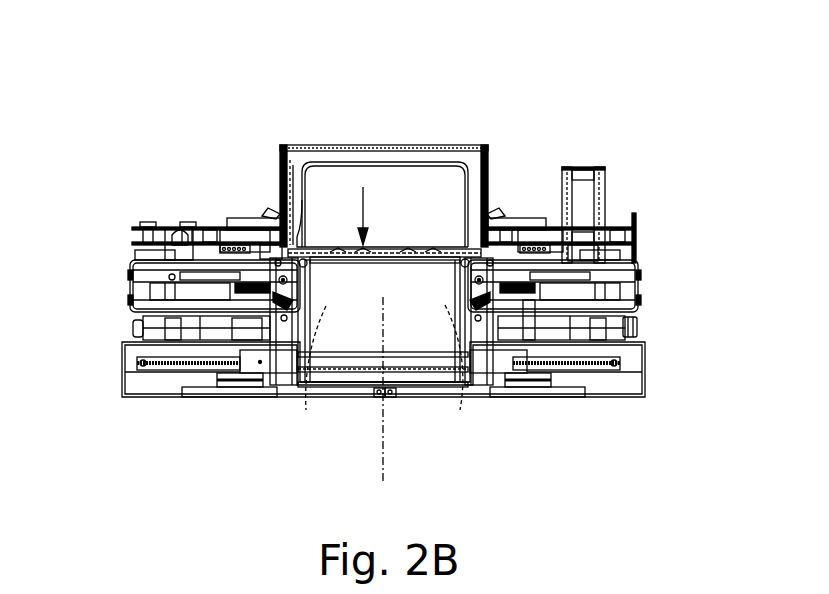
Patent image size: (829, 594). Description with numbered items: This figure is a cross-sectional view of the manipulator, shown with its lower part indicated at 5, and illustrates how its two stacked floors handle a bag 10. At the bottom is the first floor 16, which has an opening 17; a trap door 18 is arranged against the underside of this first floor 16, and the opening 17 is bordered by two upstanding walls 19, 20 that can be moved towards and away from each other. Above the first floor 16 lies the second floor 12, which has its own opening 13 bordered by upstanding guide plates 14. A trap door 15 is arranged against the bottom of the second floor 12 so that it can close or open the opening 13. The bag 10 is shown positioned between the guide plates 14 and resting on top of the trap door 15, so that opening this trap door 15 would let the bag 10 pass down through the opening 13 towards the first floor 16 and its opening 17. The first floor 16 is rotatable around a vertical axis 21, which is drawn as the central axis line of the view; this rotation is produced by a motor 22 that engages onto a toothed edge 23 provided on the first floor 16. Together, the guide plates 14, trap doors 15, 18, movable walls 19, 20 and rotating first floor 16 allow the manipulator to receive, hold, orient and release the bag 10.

The drive housing 5 is at (131, 290).
The bag 10 is at (442, 176).
The second floor 12 is at (210, 226).
The opening 13 is at (293, 240).
The guide plates 14 is at (282, 172).
The trap door 15 is at (363, 187).
The first floor 16 is at (123, 375).
The opening 17 is at (400, 380).
The trap door 18 is at (350, 397).
The upstanding wall 19 is at (312, 380).
The upstanding wall 20 is at (457, 380).
The vertical axis 21 is at (385, 478).
The motor 22 is at (585, 178).
The toothed edge 23 is at (640, 328).